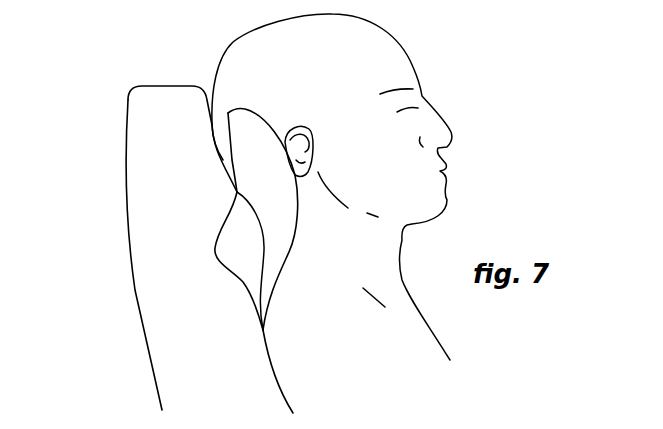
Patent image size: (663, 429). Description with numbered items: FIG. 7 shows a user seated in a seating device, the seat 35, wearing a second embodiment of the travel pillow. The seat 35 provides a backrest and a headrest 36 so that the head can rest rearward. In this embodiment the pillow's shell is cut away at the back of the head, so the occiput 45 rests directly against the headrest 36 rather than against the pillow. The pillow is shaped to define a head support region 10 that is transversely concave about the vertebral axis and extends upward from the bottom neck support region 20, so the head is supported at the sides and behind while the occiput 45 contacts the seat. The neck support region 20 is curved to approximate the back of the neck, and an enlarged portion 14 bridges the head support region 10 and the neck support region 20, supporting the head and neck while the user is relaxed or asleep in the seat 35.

The head support region 10 is at (257, 172).
The enlarged portion 14 is at (247, 192).
The neck support region 20 is at (263, 222).
The seat 35 is at (226, 340).
The headrest 36 is at (183, 87).
The occiput 45 is at (210, 140).